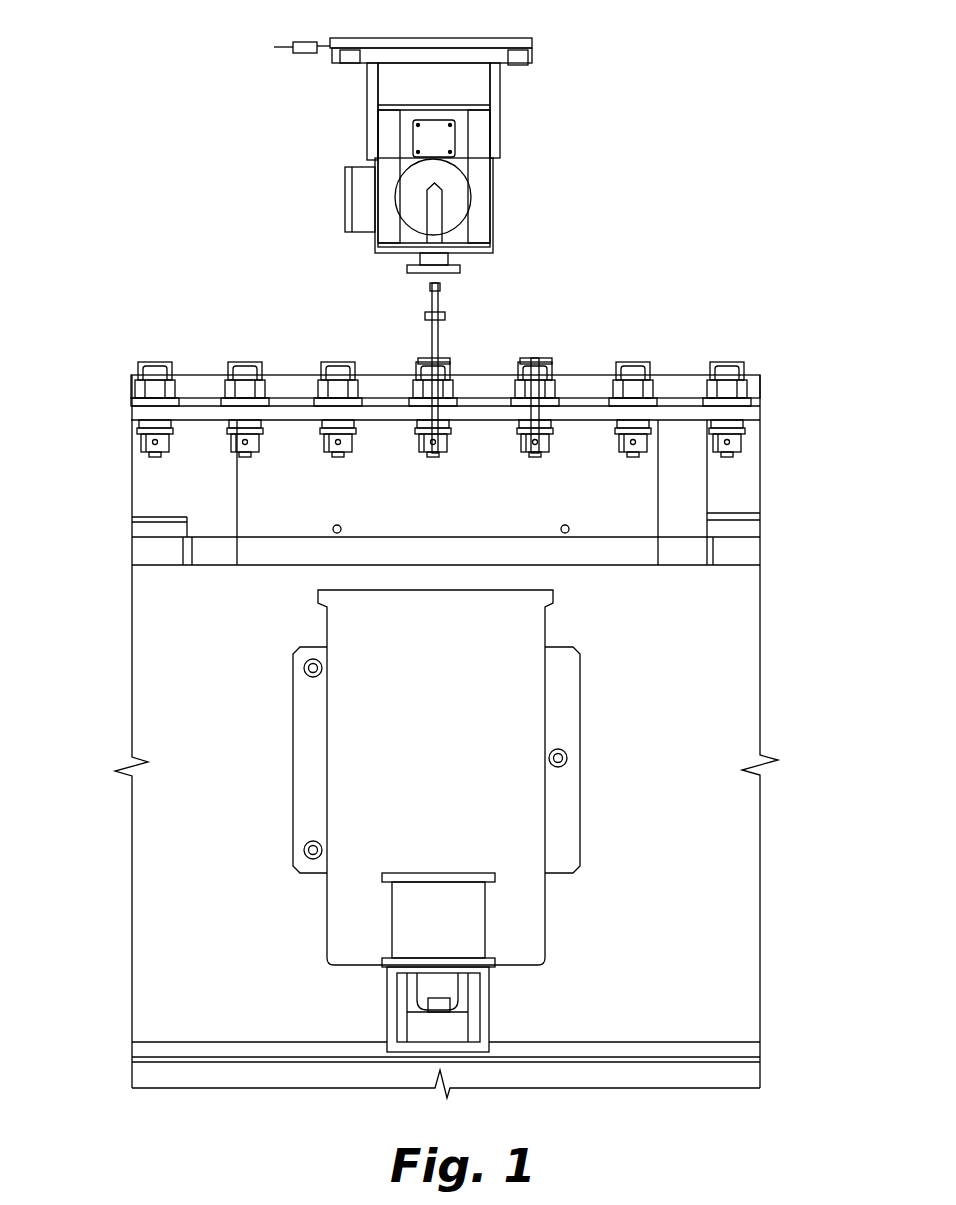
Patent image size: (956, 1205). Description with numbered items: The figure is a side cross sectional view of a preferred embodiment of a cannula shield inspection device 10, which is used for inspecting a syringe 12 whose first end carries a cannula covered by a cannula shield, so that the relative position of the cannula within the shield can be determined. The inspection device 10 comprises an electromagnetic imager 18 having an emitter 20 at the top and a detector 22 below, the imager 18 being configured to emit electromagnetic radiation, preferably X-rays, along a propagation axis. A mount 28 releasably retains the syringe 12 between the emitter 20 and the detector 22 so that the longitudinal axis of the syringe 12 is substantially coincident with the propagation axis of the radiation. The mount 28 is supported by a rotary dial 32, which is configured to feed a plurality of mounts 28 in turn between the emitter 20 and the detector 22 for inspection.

The cannula shield inspection device 10 is at (146, 96).
The syringe 12 is at (459, 338).
The electromagnetic imager 18 is at (522, 126).
The emitter 20 is at (500, 207).
The detector 22 is at (547, 920).
The mount 28 is at (754, 362).
The rotary dial 32 is at (138, 415).